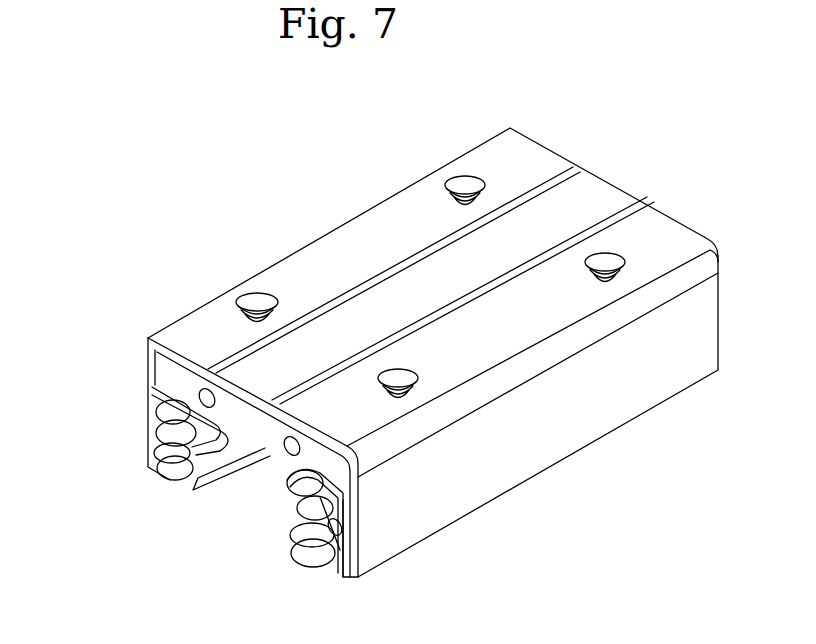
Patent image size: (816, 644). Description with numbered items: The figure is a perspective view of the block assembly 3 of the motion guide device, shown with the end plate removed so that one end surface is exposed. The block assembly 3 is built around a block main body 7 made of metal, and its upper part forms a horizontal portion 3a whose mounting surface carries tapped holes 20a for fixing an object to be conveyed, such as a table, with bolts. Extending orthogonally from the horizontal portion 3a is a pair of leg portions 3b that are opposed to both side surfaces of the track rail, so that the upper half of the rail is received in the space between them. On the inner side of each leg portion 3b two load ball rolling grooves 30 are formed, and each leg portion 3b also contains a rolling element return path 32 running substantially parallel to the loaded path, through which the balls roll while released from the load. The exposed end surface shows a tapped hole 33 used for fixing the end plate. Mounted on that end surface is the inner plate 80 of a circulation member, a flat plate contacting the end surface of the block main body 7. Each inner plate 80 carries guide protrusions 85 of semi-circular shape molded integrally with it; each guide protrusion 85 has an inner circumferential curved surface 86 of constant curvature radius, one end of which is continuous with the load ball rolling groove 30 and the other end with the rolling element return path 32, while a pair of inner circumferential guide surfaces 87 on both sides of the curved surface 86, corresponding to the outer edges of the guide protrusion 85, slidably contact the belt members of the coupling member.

The block assembly 3 is at (367, 210).
The horizontal portion 3a is at (240, 402).
The leg portion 3b is at (473, 500).
The block main body 7 is at (615, 415).
The tapped hole 20a is at (463, 184).
The load ball rolling groove 30 is at (208, 458).
The rolling element return path 32 is at (147, 403).
The tapped hole 33 is at (203, 389).
The inner plate 80 is at (148, 433).
The guide protrusion 85 is at (173, 410).
The inner circumferential curved surface 86 is at (165, 475).
The inner circumferential guide surface 87 is at (180, 475).